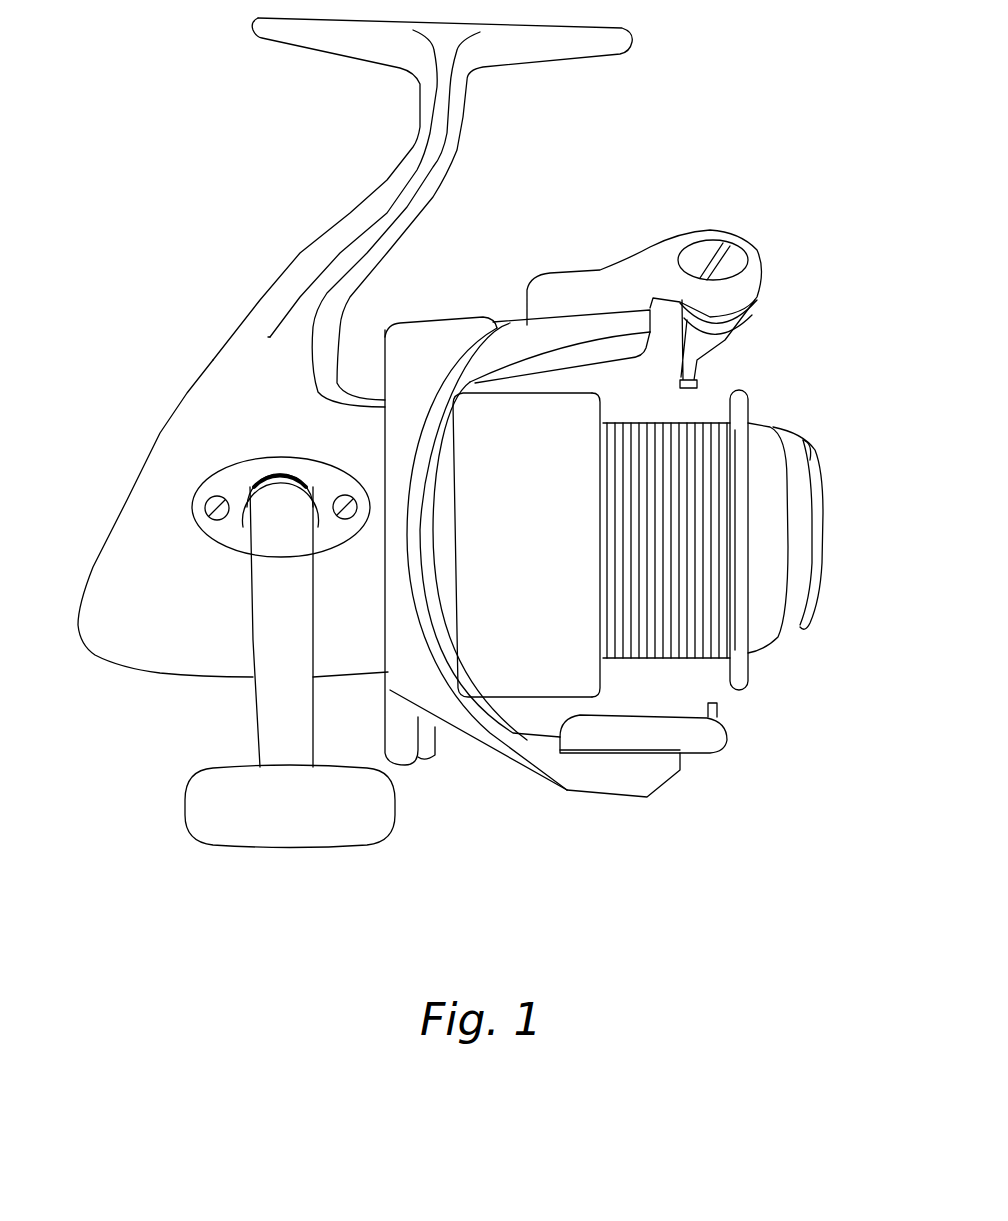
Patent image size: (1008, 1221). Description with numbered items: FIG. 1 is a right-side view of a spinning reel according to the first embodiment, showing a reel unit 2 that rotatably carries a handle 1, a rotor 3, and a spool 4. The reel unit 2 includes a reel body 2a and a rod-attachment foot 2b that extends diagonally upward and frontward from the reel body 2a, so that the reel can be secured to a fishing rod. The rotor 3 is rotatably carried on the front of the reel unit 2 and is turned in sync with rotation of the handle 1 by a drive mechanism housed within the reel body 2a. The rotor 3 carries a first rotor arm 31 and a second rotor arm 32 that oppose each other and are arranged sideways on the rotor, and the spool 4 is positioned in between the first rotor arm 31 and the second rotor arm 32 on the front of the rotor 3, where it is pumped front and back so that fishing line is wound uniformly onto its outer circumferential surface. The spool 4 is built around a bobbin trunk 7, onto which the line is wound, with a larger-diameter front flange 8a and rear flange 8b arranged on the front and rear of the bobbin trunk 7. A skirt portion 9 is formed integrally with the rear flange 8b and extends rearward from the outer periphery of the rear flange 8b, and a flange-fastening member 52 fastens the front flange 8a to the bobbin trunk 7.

The handle 1 is at (280, 715).
The reel unit 2 is at (180, 391).
The reel body 2a is at (168, 462).
The rod-attachment foot 2b is at (262, 297).
The rotor 3 is at (441, 309).
The first rotor arm 31 is at (567, 330).
The second rotor arm 32 is at (587, 775).
The spool 4 is at (667, 414).
The bobbin trunk 7 is at (702, 410).
The front flange 8a is at (750, 412).
The rear flange 8b is at (603, 420).
The skirt portion 9 is at (505, 652).
The flange-fastening member 52 is at (838, 451).